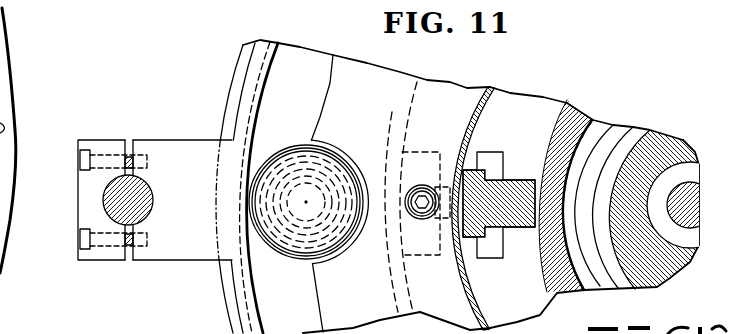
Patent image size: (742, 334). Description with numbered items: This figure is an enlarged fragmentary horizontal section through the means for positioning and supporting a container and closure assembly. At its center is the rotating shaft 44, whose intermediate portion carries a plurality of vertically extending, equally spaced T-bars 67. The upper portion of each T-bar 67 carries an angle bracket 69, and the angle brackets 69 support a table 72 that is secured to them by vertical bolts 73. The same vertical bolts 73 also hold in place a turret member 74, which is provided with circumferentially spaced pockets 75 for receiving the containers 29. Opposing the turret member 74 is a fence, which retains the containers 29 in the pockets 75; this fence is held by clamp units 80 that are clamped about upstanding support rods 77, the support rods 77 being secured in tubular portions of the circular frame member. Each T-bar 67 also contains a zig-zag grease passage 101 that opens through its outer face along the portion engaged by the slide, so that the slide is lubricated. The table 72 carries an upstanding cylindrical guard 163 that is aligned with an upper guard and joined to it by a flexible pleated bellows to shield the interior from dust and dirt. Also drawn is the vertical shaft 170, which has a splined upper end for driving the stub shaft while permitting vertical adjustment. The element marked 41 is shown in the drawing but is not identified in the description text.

The container 29 is at (281, 259).
The rotor hub 41 is at (648, 142).
The shaft 44 is at (565, 125).
The T-bar 67 is at (525, 228).
The angle bracket 69 is at (422, 257).
The table 72 is at (228, 306).
The vertical bolt 73 is at (420, 219).
The turret member 74 is at (337, 88).
The pocket 75 is at (338, 257).
The support rod 77 is at (150, 191).
The clamp unit 80 is at (163, 258).
The grease passage 101 is at (535, 188).
The cylindrical guard 163 is at (480, 303).
The vertical shaft 170 is at (692, 176).